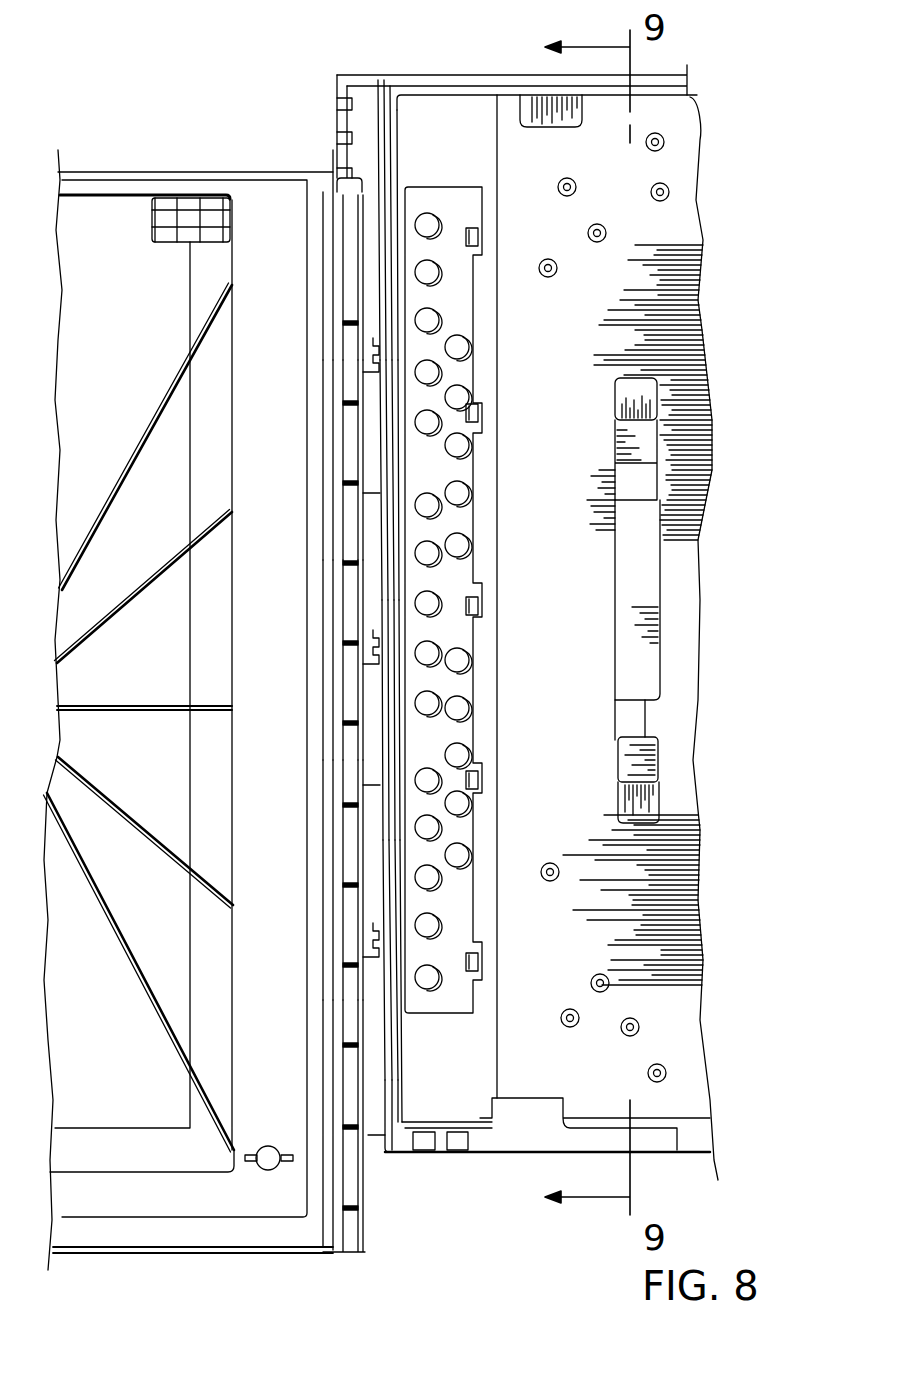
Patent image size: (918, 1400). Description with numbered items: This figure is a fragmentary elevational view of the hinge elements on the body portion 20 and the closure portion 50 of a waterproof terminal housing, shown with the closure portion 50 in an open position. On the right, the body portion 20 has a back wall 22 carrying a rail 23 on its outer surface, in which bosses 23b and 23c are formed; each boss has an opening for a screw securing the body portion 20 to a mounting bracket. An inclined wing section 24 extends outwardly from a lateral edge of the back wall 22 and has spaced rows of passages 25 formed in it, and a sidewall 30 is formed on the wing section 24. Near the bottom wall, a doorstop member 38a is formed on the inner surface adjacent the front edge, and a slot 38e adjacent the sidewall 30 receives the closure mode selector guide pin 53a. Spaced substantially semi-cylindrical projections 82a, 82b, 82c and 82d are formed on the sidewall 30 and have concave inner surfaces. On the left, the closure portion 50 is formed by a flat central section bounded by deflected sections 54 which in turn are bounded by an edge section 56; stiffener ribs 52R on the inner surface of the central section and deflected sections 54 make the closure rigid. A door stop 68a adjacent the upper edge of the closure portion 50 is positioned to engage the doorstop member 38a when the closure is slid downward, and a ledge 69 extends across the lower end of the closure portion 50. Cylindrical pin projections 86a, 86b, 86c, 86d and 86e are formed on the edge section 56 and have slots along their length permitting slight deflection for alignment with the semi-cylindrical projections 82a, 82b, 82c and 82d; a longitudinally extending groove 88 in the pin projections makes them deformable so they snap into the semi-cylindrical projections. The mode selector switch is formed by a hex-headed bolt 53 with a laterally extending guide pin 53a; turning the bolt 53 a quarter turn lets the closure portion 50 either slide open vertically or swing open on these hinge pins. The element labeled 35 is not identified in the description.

The body portion 20 is at (322, 78).
The back wall 22 is at (667, 225).
The rail 23 is at (645, 680).
The boss 23b is at (643, 485).
The boss 23c is at (635, 725).
The inclined wing section 24 is at (477, 1023).
The passages 25 is at (458, 857).
The sidewall 30 is at (387, 1098).
The notch 35 is at (697, 98).
The doorstop member 38a is at (517, 1107).
The slot 38e is at (443, 1150).
The closure portion 50 is at (136, 162).
The stiffener ribs 52R is at (176, 558).
The hex-headed bolt 53 is at (268, 1146).
The guide pin 53a is at (246, 1160).
The deflected sections 54 is at (206, 740).
The edge section 56 is at (252, 592).
The door stop 68a is at (153, 244).
The ledge 69 is at (197, 1252).
The semi-cylindrical projection 82a is at (368, 78).
The semi-cylindrical projection 82b is at (368, 434).
The semi-cylindrical projection 82c is at (354, 688).
The semi-cylindrical projection 82d is at (356, 987).
The cylindrical pin projection 86a is at (343, 268).
The cylindrical pin projection 86b is at (350, 390).
The cylindrical pin projection 86c is at (343, 594).
The cylindrical pin projection 86d is at (343, 896).
The cylindrical pin projection 86e is at (358, 1223).
The groove 88 is at (360, 350).